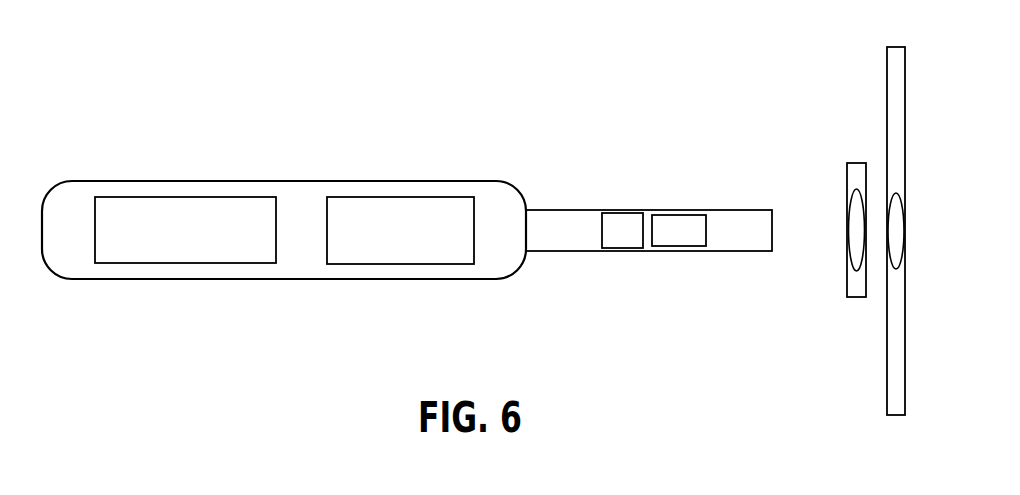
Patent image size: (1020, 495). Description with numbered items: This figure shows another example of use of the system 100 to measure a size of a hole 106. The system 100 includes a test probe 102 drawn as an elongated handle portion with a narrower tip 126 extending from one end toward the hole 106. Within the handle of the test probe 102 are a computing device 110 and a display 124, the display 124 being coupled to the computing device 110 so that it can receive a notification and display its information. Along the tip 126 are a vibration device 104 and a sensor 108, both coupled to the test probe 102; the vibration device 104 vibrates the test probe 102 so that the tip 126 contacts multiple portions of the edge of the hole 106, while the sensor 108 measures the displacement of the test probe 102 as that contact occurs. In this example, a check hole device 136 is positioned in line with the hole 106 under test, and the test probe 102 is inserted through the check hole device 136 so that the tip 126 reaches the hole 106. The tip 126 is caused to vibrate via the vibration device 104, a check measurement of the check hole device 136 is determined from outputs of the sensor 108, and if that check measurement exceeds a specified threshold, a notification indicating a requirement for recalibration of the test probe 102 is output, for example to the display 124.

The system 100 is at (104, 92).
The test probe 102 is at (104, 181).
The vibration device 104 is at (622, 230).
The hole 106 is at (925, 224).
The sensor 108 is at (679, 230).
The computing device 110 is at (185, 230).
The display 124 is at (400, 230).
The tip 126 is at (750, 200).
The check hole device 136 is at (828, 226).